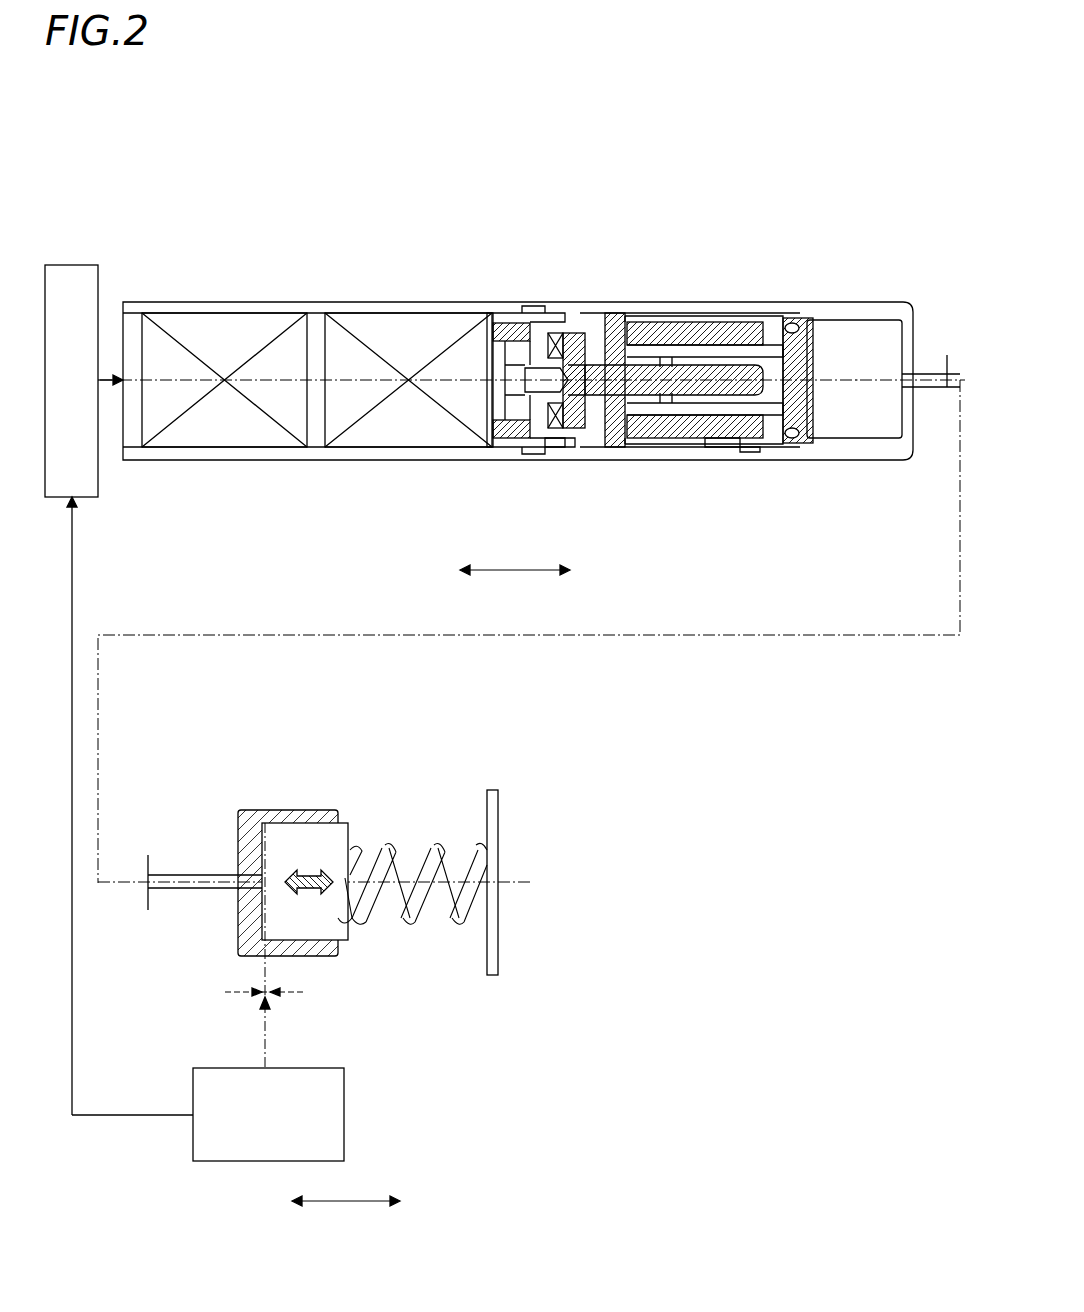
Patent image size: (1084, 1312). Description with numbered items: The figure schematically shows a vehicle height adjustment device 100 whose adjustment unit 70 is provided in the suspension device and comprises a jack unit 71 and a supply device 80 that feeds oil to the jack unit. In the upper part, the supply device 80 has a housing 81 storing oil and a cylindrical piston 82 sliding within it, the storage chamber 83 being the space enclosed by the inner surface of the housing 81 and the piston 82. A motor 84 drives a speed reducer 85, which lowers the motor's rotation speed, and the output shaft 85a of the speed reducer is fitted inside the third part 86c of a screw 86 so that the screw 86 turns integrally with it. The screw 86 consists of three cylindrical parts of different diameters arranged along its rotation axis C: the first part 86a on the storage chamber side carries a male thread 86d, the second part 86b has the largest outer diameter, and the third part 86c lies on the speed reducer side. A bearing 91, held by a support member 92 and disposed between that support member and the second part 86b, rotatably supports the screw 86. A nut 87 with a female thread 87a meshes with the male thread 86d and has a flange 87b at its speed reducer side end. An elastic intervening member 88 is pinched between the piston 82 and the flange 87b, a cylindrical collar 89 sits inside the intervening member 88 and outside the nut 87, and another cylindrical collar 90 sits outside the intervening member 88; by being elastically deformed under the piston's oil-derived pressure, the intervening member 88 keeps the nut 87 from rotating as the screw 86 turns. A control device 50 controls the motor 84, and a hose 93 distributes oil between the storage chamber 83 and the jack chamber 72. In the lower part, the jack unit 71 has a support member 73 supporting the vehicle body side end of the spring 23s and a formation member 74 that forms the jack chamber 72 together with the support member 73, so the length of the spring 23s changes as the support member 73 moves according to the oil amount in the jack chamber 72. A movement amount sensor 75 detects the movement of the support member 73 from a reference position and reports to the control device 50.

The vehicle height adjustment device 100 is at (150, 143).
The control device 50 is at (68, 265).
The adjustment unit 70 is at (222, 182).
The supply device 80 is at (805, 224).
The motor 84 is at (232, 302).
The speed reducer 85 is at (397, 302).
The output shaft 85a is at (513, 328).
The screw 86 is at (704, 242).
The first part 86a is at (678, 322).
The second part 86b is at (577, 322).
The third part 86c is at (540, 340).
The male thread 86d is at (738, 366).
The nut 87 is at (630, 395).
The female thread 87a is at (636, 388).
The flange 87b is at (610, 447).
The intervening member 88 is at (662, 420).
The collar 89 is at (697, 424).
The collar 90 is at (732, 442).
The bearing 91 is at (553, 442).
The support member 92 is at (512, 447).
The housing 81 is at (866, 302).
The piston 82 is at (808, 318).
The storage chamber 83 is at (857, 358).
The rotation axis C is at (856, 392).
The hose 93 is at (936, 365).
The jack unit 71 is at (376, 731).
The jack chamber 72 is at (268, 822).
The support member 73 is at (318, 818).
The formation member 74 is at (250, 815).
The spring 23s is at (450, 918).
The movement amount sensor 75 is at (292, 1066).